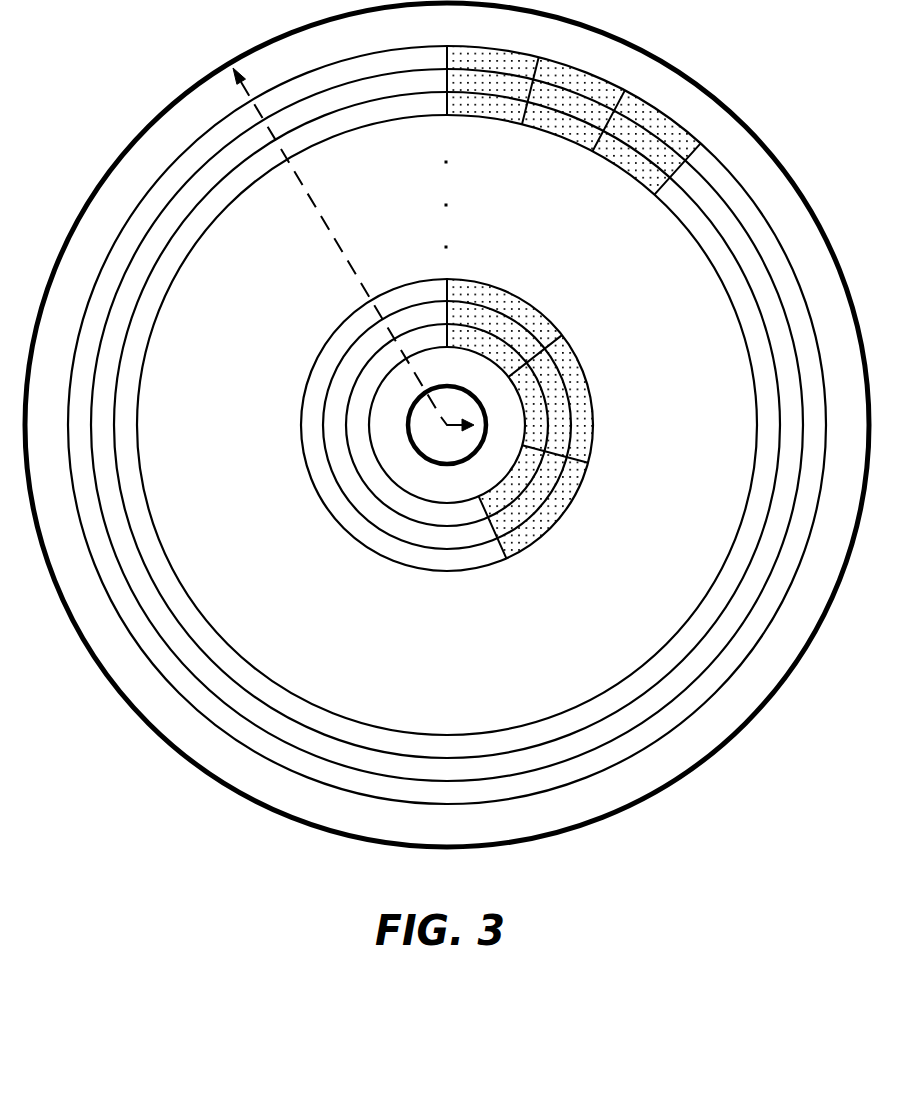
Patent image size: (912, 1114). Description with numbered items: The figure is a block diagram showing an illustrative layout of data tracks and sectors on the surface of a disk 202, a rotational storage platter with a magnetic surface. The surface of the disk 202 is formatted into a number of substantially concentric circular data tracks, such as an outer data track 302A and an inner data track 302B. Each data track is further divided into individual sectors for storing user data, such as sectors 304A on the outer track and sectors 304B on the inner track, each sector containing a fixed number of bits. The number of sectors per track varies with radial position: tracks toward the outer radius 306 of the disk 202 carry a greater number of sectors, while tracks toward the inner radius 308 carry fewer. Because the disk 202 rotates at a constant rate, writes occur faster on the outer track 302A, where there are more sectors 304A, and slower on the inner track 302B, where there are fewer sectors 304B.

The disk 202 is at (466, 640).
The data track 302A is at (358, 61).
The sector 304A is at (560, 122).
The data track 302B is at (447, 348).
The sector 304B is at (578, 415).
The outer radius 306 is at (362, 244).
The inner radius 308 is at (456, 427).